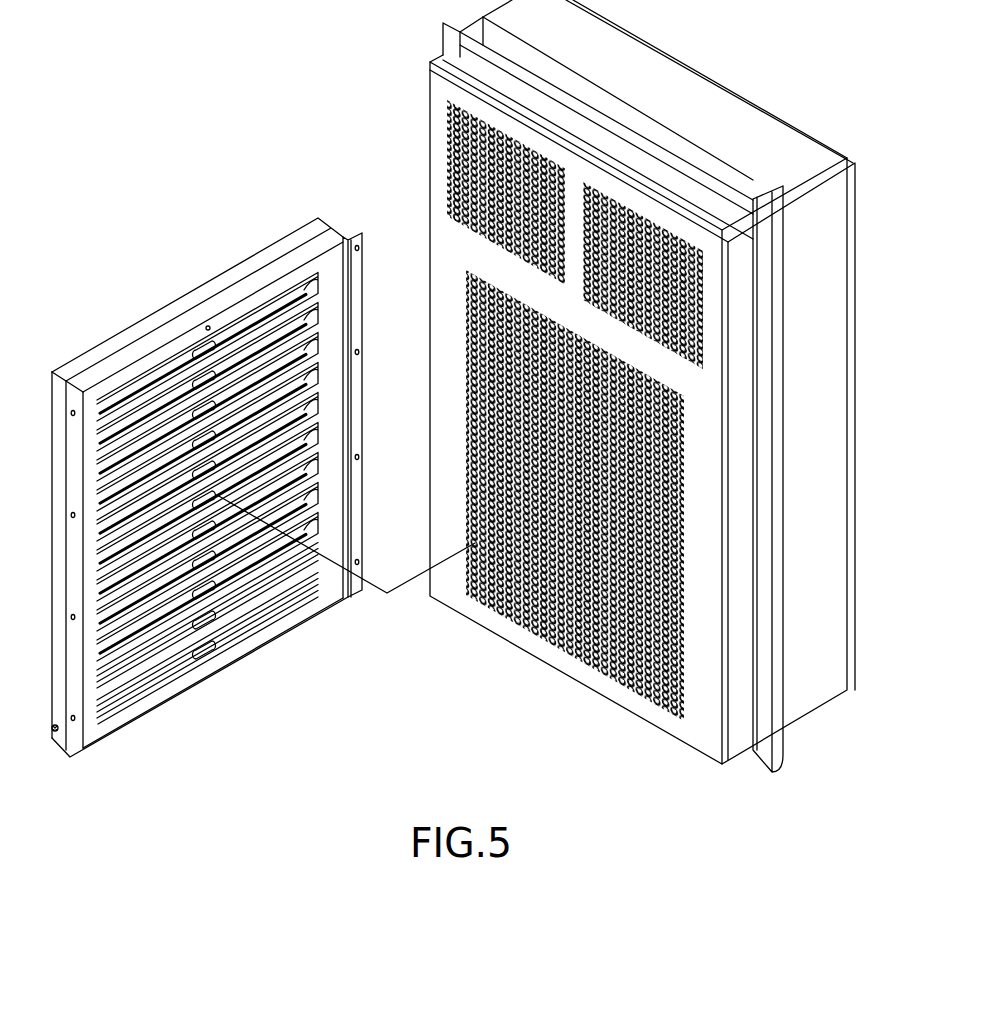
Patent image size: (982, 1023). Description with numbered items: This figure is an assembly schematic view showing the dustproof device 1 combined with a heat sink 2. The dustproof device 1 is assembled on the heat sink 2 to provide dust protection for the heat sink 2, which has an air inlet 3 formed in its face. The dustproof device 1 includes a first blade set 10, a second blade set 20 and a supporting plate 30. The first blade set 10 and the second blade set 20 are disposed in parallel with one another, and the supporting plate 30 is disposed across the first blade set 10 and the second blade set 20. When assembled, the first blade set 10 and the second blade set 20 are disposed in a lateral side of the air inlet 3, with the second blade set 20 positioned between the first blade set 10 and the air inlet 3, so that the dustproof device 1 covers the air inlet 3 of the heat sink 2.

The dustproof device 1 is at (155, 281).
The first blade set 10 is at (235, 273).
The second blade set 20 is at (165, 690).
The supporting plate 30 is at (205, 657).
The heat sink 2 is at (693, 97).
The air inlet 3 is at (543, 630).